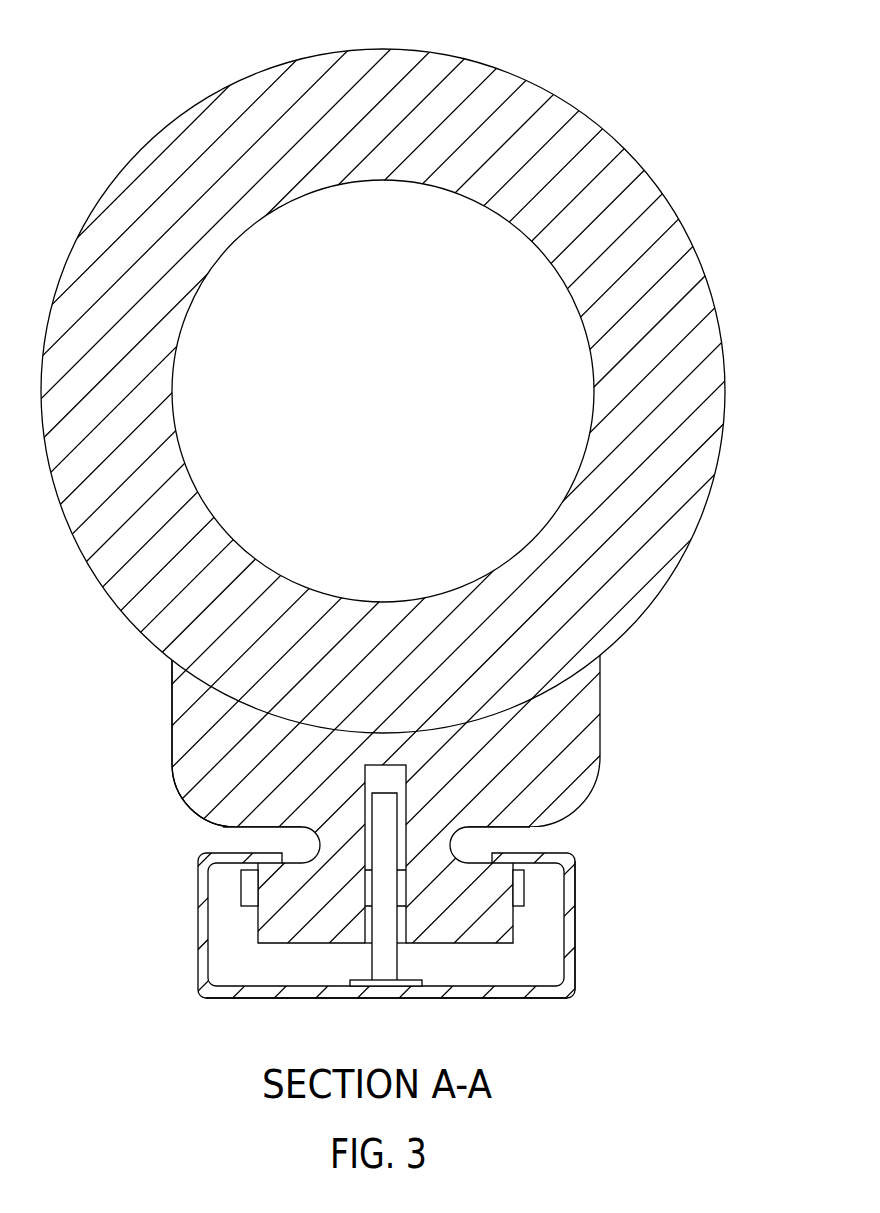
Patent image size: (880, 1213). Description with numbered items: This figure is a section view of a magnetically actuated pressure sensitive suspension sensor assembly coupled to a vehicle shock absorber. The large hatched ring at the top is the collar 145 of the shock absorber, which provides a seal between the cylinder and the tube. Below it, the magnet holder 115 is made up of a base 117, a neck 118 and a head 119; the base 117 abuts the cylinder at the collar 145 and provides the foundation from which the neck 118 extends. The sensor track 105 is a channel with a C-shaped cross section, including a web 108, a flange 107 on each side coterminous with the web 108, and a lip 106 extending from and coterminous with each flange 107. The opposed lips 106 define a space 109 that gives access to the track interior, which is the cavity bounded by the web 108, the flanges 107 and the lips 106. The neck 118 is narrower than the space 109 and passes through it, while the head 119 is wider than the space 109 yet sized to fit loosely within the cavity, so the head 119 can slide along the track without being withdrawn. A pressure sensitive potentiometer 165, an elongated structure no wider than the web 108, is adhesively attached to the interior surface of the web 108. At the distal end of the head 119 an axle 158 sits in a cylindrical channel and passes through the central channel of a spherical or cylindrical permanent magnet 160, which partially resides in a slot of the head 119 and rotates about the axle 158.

The collar 145 is at (449, 137).
The base 117 is at (555, 737).
The magnet holder 115 is at (170, 755).
The neck 118 is at (300, 828).
The space 109 is at (297, 853).
The lip 106 is at (513, 860).
The head 119 is at (272, 935).
The permanent magnet 160 is at (383, 935).
The track 105 is at (197, 968).
The flange 107 is at (567, 933).
The web 108 is at (507, 993).
The axle 158 is at (250, 890).
The pressure sensitive potentiometer 165 is at (357, 982).